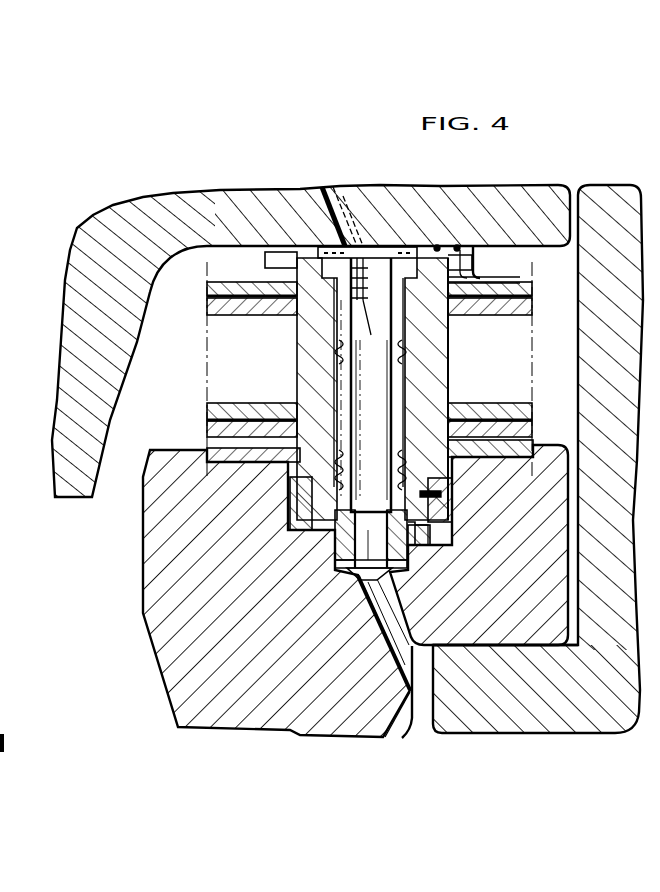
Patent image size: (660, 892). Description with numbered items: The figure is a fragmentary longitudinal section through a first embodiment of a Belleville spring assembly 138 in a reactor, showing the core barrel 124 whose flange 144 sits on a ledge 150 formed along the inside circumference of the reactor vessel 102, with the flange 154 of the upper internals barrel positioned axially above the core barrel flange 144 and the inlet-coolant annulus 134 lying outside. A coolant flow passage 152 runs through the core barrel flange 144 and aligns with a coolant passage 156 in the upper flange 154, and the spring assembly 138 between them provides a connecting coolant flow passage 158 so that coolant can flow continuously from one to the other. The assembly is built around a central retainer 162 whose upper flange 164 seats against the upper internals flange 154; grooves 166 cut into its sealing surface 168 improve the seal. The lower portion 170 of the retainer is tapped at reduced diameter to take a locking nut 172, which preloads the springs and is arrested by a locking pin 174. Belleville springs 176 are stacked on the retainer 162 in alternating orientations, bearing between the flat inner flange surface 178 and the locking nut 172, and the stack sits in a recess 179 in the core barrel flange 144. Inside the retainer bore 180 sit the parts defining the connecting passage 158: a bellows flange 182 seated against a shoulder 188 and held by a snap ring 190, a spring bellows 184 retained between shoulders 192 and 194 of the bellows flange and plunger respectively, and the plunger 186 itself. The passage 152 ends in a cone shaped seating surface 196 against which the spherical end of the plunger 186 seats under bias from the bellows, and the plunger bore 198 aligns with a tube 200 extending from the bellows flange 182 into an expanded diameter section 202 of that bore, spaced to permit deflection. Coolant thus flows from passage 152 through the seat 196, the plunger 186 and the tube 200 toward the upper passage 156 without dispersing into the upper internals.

The reactor vessel 102 is at (618, 511).
The core barrel 124 is at (300, 736).
The annulus 134 is at (418, 737).
The Belleville spring assembly 138 is at (196, 388).
The core barrel flange 144 is at (520, 595).
The ledge 150 is at (473, 705).
The coolant flow passage 152 is at (380, 642).
The upper internals barrel flange 154 is at (483, 220).
The coolant passage 156 is at (343, 236).
The connecting coolant flow passage 158 is at (407, 406).
The central retainer 162 is at (294, 374).
The upper flange 164 is at (478, 268).
The grooves 166 is at (458, 246).
The sealing surface 168 is at (475, 253).
The lower portion 170 is at (295, 540).
The locking nut 172 is at (450, 520).
The locking pin 174 is at (450, 495).
The Belleville springs 176 is at (535, 288).
The inner flange surface 178 is at (265, 262).
The recess 179 is at (207, 452).
The bore 180 is at (443, 350).
The bellows flange 182 is at (446, 322).
The spring bellows 184 is at (443, 373).
The plunger 186 is at (412, 565).
The shoulder 188 is at (300, 326).
The snap ring 190 is at (328, 243).
The shoulder 192 is at (375, 300).
The shoulder 194 is at (423, 540).
The cone shaped seating surface 196 is at (358, 572).
The plunger bore 198 is at (335, 553).
The tube 200 is at (455, 399).
The expanded diameter section 202 is at (290, 500).